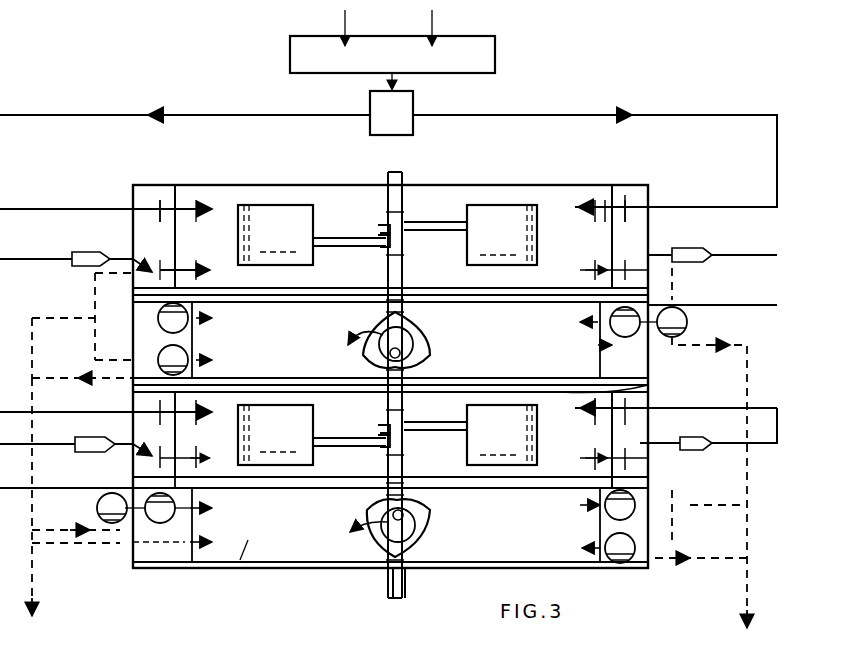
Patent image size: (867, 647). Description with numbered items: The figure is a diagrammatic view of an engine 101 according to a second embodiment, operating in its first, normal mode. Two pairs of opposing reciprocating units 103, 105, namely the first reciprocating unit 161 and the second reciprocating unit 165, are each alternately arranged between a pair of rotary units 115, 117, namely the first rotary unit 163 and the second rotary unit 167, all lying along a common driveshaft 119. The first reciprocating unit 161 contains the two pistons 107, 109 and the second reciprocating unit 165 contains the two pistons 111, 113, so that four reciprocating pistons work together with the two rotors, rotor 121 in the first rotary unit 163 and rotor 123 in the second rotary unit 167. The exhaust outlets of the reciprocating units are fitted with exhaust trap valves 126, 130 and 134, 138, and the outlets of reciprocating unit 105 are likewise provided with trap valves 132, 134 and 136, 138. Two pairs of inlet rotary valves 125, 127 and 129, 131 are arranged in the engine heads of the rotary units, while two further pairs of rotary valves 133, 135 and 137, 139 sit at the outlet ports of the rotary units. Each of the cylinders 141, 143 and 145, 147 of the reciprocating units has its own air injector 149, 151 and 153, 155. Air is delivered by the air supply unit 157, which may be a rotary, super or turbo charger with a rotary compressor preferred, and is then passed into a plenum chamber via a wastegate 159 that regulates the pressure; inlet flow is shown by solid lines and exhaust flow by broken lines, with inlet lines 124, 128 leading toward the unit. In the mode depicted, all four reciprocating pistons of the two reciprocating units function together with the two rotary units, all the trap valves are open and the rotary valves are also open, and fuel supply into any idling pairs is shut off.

The engine 101 is at (658, 184).
The reciprocating unit 103 is at (222, 185).
The reciprocating unit 105 is at (648, 412).
The piston 107 is at (285, 212).
The piston 109 is at (485, 212).
The piston 111 is at (303, 425).
The piston 113 is at (485, 420).
The rotary unit 115 is at (133, 342).
The rotary unit 117 is at (283, 570).
The common driveshaft 119 is at (392, 588).
The rotor 121 is at (422, 348).
The rotor 123 is at (425, 512).
The inlet line 124 is at (160, 200).
The inlet rotary valve 125 is at (210, 320).
The exhaust trap valve 126 is at (170, 268).
The inlet rotary valve 127 is at (210, 356).
The inlet port 128 is at (602, 195).
The inlet rotary valve 129 is at (130, 527).
The exhaust trap valve 130 is at (598, 268).
The inlet rotary valve 131 is at (97, 510).
The trap valve 132 is at (190, 425).
The rotary valve 133 is at (575, 330).
The exhaust trap valve 134 is at (192, 448).
The rotary valve 135 is at (688, 325).
The trap valve 136 is at (603, 420).
The rotary valve 137 is at (580, 508).
The exhaust trap valve 138 is at (648, 478).
The rotary valve 139 is at (580, 543).
The cylinder 141 is at (197, 185).
The cylinder 143 is at (525, 185).
The cylinder 145 is at (228, 400).
The cylinder 147 is at (648, 385).
The air injector 149 is at (72, 255).
The air injector 151 is at (688, 248).
The air injector 153 is at (90, 452).
The air injector 155 is at (705, 452).
The air supply unit 157 is at (290, 52).
The wastegate 159 is at (370, 100).
The first reciprocating unit 161 is at (393, 236).
The first rotary unit 163 is at (396, 340).
The second reciprocating unit 165 is at (393, 434).
The second rotary unit 167 is at (396, 525).